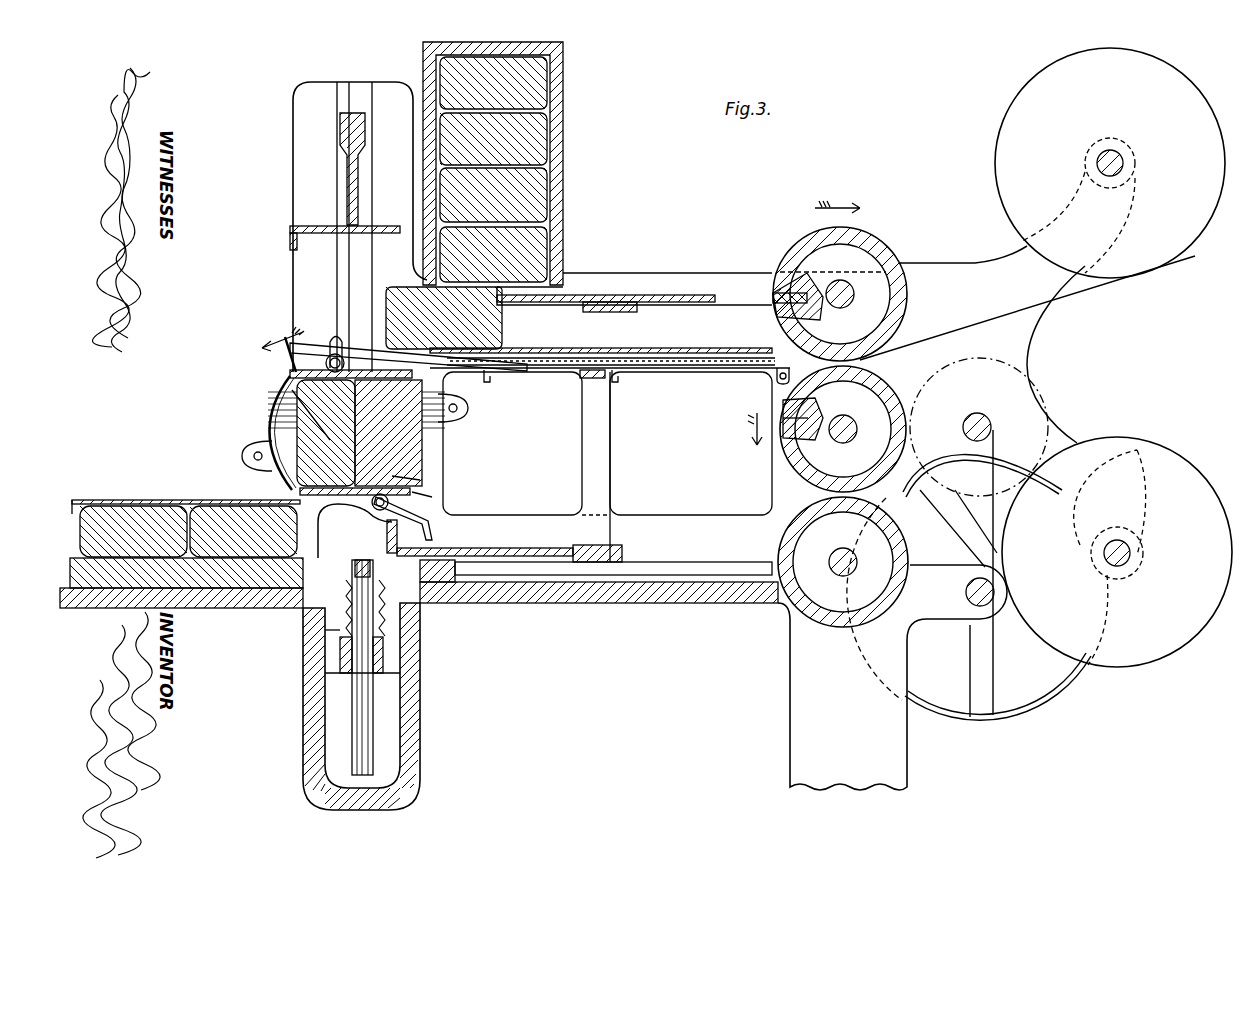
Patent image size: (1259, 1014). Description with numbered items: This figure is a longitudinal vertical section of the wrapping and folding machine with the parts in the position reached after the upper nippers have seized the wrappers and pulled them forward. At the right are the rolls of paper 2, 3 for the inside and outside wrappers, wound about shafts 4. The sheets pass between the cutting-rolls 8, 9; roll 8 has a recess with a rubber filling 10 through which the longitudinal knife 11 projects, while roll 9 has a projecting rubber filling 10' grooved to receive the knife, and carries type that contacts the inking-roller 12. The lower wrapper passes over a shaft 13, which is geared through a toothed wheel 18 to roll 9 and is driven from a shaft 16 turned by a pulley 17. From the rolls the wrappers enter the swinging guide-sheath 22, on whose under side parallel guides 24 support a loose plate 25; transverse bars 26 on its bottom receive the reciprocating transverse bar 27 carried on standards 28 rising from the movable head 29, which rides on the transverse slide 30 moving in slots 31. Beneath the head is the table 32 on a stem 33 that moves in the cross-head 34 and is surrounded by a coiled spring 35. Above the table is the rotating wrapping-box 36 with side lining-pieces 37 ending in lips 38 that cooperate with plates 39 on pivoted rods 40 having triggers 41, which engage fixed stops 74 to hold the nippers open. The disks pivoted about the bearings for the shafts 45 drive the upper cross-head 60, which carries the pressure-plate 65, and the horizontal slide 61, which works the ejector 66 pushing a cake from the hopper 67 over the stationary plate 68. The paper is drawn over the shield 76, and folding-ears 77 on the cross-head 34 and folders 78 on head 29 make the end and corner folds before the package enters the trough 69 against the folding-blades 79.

The roll of paper for inside wrapper 2 is at (1110, 163).
The roll of paper for outside wrapper 3 is at (1117, 552).
The shaft 4 is at (1123, 165).
The cutting-roll 8 is at (797, 248).
The cutting-roll 9 is at (806, 476).
The rubber filling 10 is at (634, 309).
The projecting rubber filling 10' is at (772, 413).
The longitudinal knife 11 is at (770, 300).
The inking-roller 12 is at (832, 626).
The shaft 13 is at (991, 433).
The shaft 16 is at (992, 602).
The pulley 17 is at (1022, 712).
The toothed wheel 18 is at (984, 368).
The swinging guide-sheath 22 is at (611, 379).
The parallel guides 24 is at (610, 384).
The loose plate 25 is at (601, 378).
The transverse bars 26 is at (487, 382).
The transverse bar 27 is at (590, 380).
The standards 28 is at (590, 463).
The movable head 29 is at (485, 537).
The transverse slide 30 is at (590, 562).
The slots 31 is at (670, 575).
The table 32 is at (305, 624).
The stem 33 is at (355, 702).
The cross-head 34 is at (345, 655).
The coiled spring 35 is at (400, 620).
The rotating wrapping-box 36 is at (310, 362).
The side lining-pieces 37 is at (300, 390).
The lips 38 is at (286, 346).
The plates 39 is at (290, 372).
The rods 40 is at (338, 350).
The triggers 41 is at (334, 354).
The shafts 45 is at (356, 432).
The upper cross-head 60 is at (340, 133).
The horizontal slide 61 is at (600, 296).
The pressure-plate 65 is at (360, 227).
The ejector 66 is at (502, 320).
The hopper 67 is at (563, 124).
The stationary plate 68 is at (610, 321).
The trough 69 is at (82, 500).
The fixed stops 74 is at (255, 455).
The shield 76 is at (262, 430).
The folding-ears 77 is at (335, 635).
The folders 78 is at (357, 531).
The folding-blades 79 is at (218, 505).